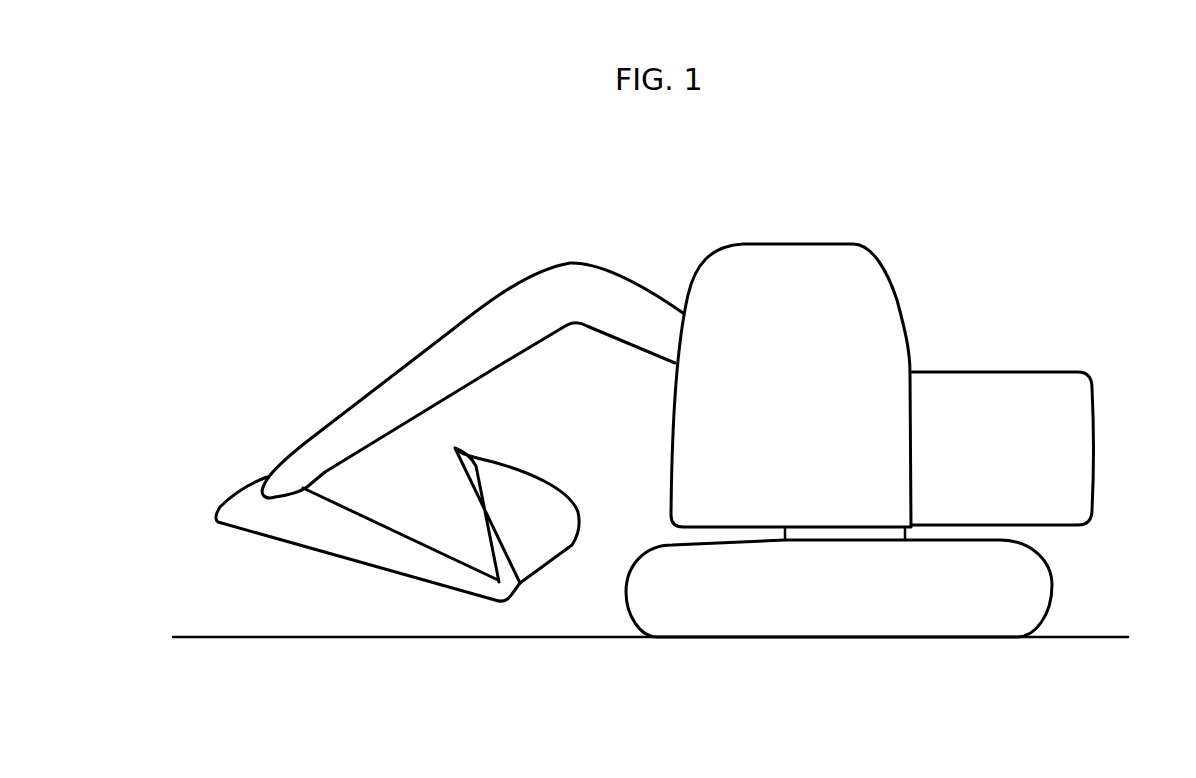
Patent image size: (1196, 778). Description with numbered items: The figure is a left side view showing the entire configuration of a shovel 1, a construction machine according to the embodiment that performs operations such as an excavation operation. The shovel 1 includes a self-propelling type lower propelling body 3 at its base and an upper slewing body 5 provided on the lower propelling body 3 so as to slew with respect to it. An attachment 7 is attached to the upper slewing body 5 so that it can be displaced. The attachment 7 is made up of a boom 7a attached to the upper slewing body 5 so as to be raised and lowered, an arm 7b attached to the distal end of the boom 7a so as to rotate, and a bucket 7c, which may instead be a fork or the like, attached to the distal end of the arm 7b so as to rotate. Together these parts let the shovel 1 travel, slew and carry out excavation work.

The shovel 1 is at (278, 233).
The lower propelling body 3 is at (1030, 588).
The upper slewing body 5 is at (1082, 448).
The attachment 7 is at (666, 239).
The boom 7a is at (573, 278).
The arm 7b is at (360, 548).
The bucket 7c is at (528, 562).